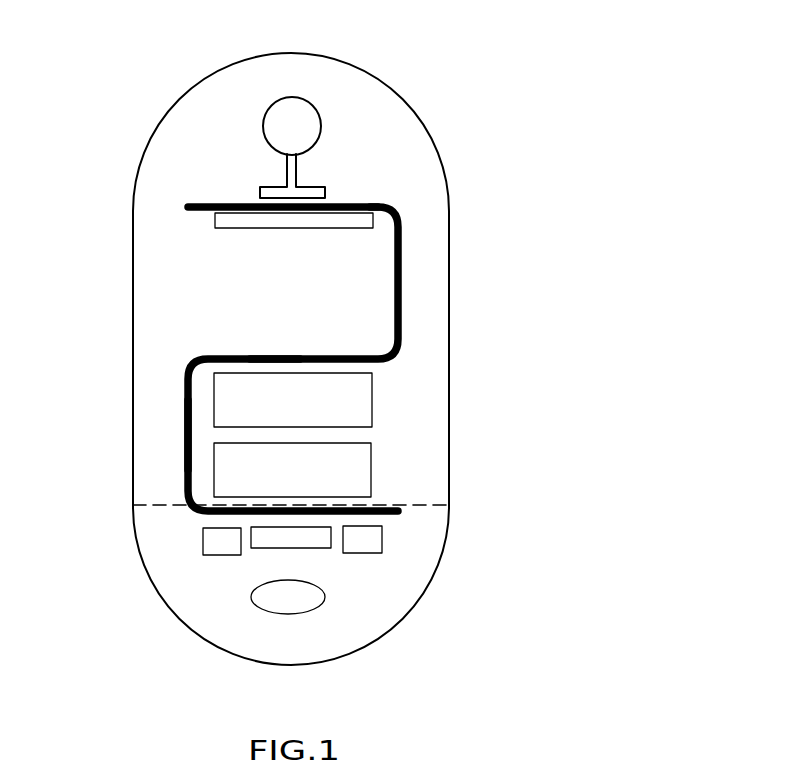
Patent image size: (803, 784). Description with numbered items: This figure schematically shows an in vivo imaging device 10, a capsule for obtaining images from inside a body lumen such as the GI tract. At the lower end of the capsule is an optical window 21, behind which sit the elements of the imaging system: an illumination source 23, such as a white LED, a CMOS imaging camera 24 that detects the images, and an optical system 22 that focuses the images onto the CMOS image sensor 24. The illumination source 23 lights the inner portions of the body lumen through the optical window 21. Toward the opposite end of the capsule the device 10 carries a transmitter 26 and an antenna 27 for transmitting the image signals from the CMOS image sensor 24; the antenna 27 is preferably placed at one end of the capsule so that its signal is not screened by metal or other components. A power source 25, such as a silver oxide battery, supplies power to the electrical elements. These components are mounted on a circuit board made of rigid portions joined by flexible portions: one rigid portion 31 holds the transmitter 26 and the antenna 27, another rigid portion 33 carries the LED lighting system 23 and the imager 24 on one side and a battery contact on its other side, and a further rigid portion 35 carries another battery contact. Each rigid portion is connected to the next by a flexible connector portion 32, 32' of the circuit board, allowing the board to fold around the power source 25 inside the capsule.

The in vivo imaging device 10 is at (607, 62).
The optical window 21 is at (342, 652).
The optical system 22 is at (270, 613).
The illumination source 23 is at (222, 553).
The CMOS imaging camera 24 is at (320, 548).
The power source 25 is at (373, 477).
The transmitter 26 is at (240, 230).
The antenna 27 is at (312, 98).
The rigid portion of the circuit board 31 is at (207, 203).
The flexible connector portion of the circuit board 32 is at (354, 359).
The flexible connector portion of the circuit board 32' is at (128, 435).
The rigid portion of the circuit board 33 is at (223, 513).
The rigid portion of the circuit board 35 is at (270, 357).